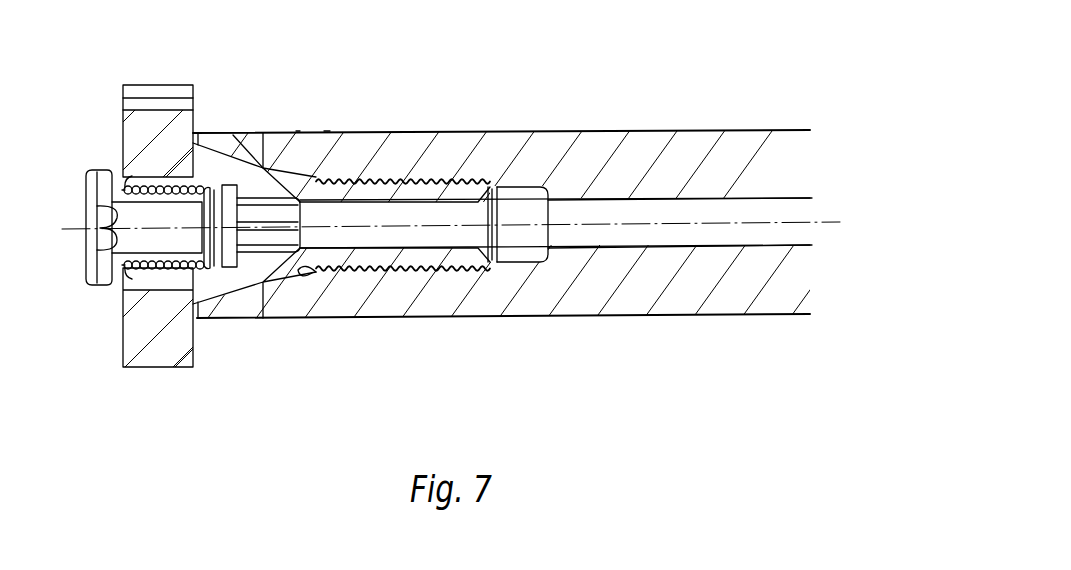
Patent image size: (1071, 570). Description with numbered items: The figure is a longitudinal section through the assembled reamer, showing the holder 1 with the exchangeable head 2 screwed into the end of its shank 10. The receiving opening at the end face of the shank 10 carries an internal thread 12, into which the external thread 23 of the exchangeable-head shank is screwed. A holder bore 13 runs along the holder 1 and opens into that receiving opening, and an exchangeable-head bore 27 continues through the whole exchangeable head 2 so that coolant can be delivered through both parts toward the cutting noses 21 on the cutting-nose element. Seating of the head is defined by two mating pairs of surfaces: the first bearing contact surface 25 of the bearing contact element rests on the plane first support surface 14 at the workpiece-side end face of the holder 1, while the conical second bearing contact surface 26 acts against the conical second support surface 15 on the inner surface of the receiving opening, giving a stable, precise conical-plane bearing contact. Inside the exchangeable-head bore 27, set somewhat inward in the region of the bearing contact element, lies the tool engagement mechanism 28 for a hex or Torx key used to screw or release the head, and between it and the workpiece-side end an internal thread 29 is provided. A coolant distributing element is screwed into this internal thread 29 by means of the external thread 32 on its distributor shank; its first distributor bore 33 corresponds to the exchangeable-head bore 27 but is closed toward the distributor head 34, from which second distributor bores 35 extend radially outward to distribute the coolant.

The holder 1 is at (640, 99).
The exchangeable head 2 is at (235, 76).
The shank 10 is at (726, 300).
The internal thread 12 is at (410, 270).
The holder bore 13 is at (642, 233).
The first support surface 14 is at (296, 130).
The second support surface 15 is at (325, 130).
The cutting noses 21 is at (158, 85).
The external thread 23 is at (428, 185).
The first bearing contact surface 25 is at (250, 132).
The second bearing contact surface 26 is at (300, 272).
The exchangeable-head bore 27 is at (338, 232).
The tool engagement mechanism 28 is at (258, 262).
The internal thread 29 is at (206, 270).
The external thread 32 is at (118, 190).
The first distributor bore 33 is at (163, 237).
The distributor head 34 is at (86, 190).
The second distributor bores 35 is at (107, 290).